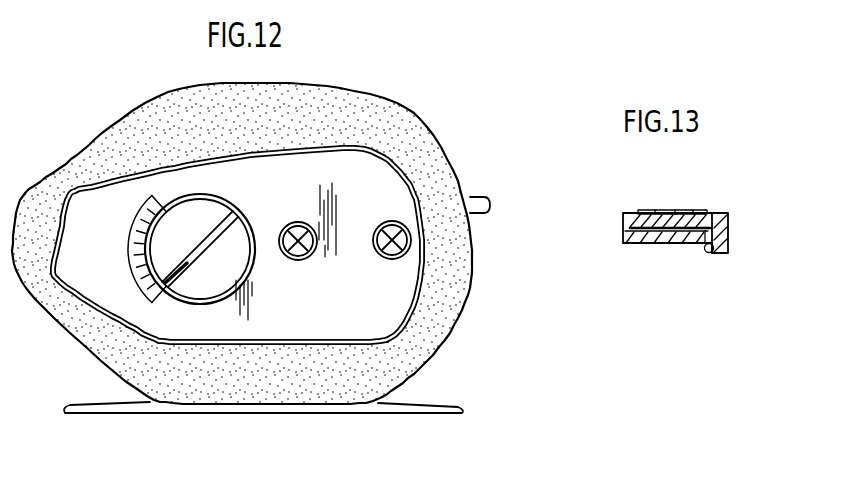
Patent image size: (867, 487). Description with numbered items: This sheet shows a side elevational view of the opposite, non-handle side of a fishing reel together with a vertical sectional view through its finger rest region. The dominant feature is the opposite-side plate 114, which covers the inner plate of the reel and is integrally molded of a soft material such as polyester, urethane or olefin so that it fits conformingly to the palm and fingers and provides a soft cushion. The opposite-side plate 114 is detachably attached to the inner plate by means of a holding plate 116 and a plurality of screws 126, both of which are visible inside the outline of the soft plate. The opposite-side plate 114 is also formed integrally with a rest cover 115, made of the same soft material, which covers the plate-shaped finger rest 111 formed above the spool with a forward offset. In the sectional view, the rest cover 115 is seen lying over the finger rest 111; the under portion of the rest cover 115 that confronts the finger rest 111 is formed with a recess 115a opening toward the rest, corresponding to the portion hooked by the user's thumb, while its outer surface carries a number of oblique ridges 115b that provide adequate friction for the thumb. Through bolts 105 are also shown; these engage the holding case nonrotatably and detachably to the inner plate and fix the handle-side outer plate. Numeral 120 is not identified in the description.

In FIG. 12, the opposite-side plate 114 is at (400, 120).
In FIG. 12, the holding plate 116 is at (390, 305).
In FIG. 12, the base plate 120 is at (378, 408).
In FIG. 12, the screws 126 is at (302, 258).
In FIG. 13, the rest cover 115 is at (720, 212).
In FIG. 13, the oblique ridges 115b is at (648, 210).
In FIG. 13, the recess 115a is at (680, 244).
In FIG. 13, the finger rest 111 is at (638, 244).
In FIG. 13, the through bolts 105 is at (709, 255).